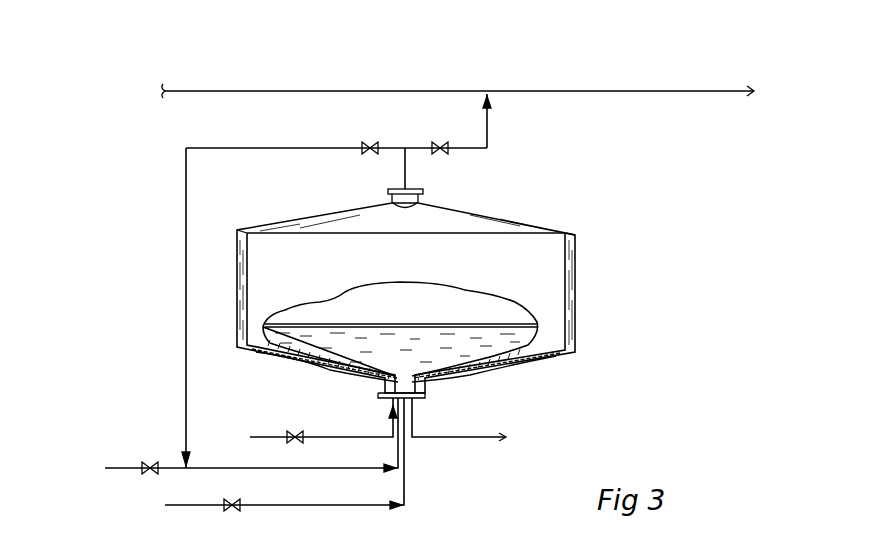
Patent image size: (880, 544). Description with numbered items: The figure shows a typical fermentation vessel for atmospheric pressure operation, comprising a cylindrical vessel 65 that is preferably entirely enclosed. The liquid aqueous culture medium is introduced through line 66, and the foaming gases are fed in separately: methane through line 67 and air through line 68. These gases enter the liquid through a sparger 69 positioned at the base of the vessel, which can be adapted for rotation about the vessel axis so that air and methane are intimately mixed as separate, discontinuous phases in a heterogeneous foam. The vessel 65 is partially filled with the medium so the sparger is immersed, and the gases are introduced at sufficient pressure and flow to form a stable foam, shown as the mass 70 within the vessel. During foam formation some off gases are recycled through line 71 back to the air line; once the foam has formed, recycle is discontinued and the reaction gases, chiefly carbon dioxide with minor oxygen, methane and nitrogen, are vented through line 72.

The cylindrical vessel 65 is at (567, 313).
The line 66 is at (360, 437).
The line 67 is at (312, 508).
The line 68 is at (250, 468).
The sparger 69 is at (450, 372).
The slurry mass 70 is at (330, 352).
The line 71 is at (300, 150).
The line 72 is at (525, 93).